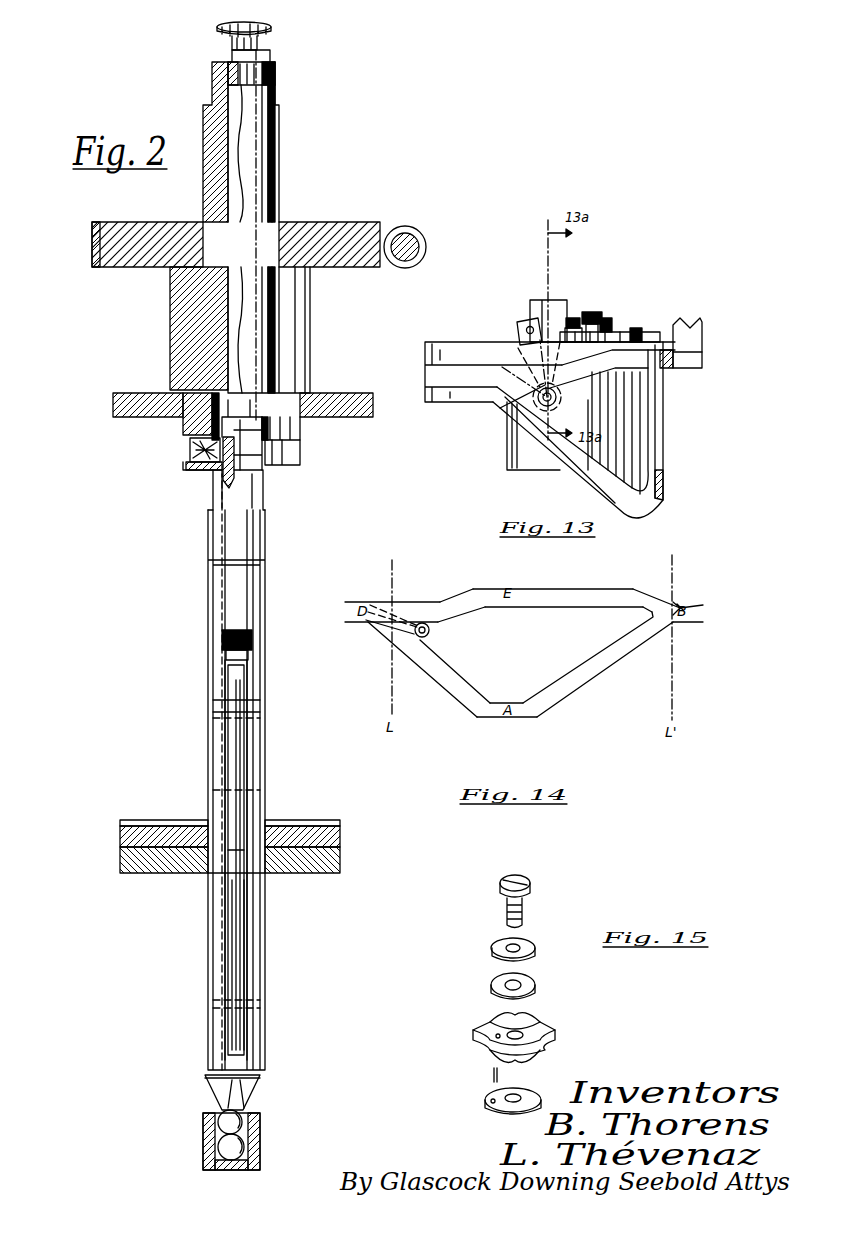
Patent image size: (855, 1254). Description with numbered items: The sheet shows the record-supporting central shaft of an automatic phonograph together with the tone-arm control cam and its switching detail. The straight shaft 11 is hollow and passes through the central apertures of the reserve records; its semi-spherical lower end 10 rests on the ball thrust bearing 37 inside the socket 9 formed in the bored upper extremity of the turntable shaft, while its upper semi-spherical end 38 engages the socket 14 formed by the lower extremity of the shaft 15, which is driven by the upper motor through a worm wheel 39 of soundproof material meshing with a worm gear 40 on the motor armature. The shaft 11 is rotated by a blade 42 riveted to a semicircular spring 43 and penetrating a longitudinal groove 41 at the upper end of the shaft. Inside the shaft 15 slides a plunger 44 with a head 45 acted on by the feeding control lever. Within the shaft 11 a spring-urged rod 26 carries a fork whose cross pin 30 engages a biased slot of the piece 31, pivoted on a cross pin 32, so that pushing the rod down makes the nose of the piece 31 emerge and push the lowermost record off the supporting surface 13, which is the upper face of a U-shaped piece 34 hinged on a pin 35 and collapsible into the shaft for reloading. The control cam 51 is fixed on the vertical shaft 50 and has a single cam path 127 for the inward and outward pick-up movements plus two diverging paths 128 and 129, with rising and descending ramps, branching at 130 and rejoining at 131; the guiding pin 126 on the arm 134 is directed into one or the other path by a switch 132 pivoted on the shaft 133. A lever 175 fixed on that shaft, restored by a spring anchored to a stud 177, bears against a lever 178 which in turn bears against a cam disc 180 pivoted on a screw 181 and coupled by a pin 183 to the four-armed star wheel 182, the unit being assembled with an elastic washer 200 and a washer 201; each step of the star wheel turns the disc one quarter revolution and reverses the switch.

In FIG. 2, the socket 9 is at (263, 1126).
In FIG. 2, the semi-spherical lower end 10 is at (225, 1118).
In FIG. 2, the straight shaft 11 is at (208, 1055).
In FIG. 2, the supporting surface 13 is at (240, 875).
In FIG. 2, the socket 14 is at (203, 413).
In FIG. 2, the shaft 15 is at (195, 362).
In FIG. 2, the rod 26 is at (232, 412).
In FIG. 2, the cross pin 30 is at (228, 787).
In FIG. 2, the piece 31 is at (233, 757).
In FIG. 2, the cross pin 32 is at (215, 707).
In FIG. 2, the U-shaped piece 34 is at (228, 975).
In FIG. 2, the pin 35 is at (205, 1003).
In FIG. 2, the ball thrust bearing 37 is at (233, 1150).
In FIG. 2, the upper semi-spherical end 38 is at (237, 453).
In FIG. 2, the worm wheel 39 is at (315, 237).
In FIG. 2, the worm gear 40 is at (420, 241).
In FIG. 2, the longitudinal groove 41 is at (220, 590).
In FIG. 2, the blade 42 is at (214, 471).
In FIG. 2, the semicircular spring 43 is at (192, 449).
In FIG. 2, the plunger 44 is at (240, 68).
In FIG. 2, the head 45 is at (270, 32).
In FIG. 13, the vertical shaft 50 is at (537, 305).
In FIG. 13, the cam 51 is at (650, 430).
In FIG. 13, the guiding pin 126 is at (685, 328).
In FIG. 13, the cam path 127 is at (467, 372).
In FIG. 14, the cam path 127 is at (350, 608).
In FIG. 13, the cam path 128 is at (625, 362).
In FIG. 14, the cam path 128 is at (545, 596).
In FIG. 13, the cam path 129 is at (660, 498).
In FIG. 14, the cam path 129 is at (525, 712).
In FIG. 14, the diverging point 130 is at (368, 620).
In FIG. 14, the converging point 131 is at (676, 606).
In FIG. 13, the switch 132 is at (512, 390).
In FIG. 14, the switch 132 is at (378, 626).
In FIG. 13, the shaft 133 is at (540, 405).
In FIG. 14, the shaft 133 is at (415, 637).
In FIG. 13, the arm 134 is at (690, 362).
In FIG. 13, the lever 175 is at (522, 326).
In FIG. 13, the stud 177 is at (640, 332).
In FIG. 13, the lever 178 is at (495, 402).
In FIG. 13, the cam disc 180 is at (608, 330).
In FIG. 15, the cam disc 180 is at (545, 1098).
In FIG. 13, the screw 181 is at (590, 316).
In FIG. 15, the screw 181 is at (530, 912).
In FIG. 13, the four-armed star wheel 182 is at (570, 322).
In FIG. 15, the four-armed star wheel 182 is at (535, 1030).
In FIG. 15, the pin 183 is at (505, 1078).
In FIG. 15, the elastic washer 200 is at (576, 944).
In FIG. 15, the washer 201 is at (578, 978).